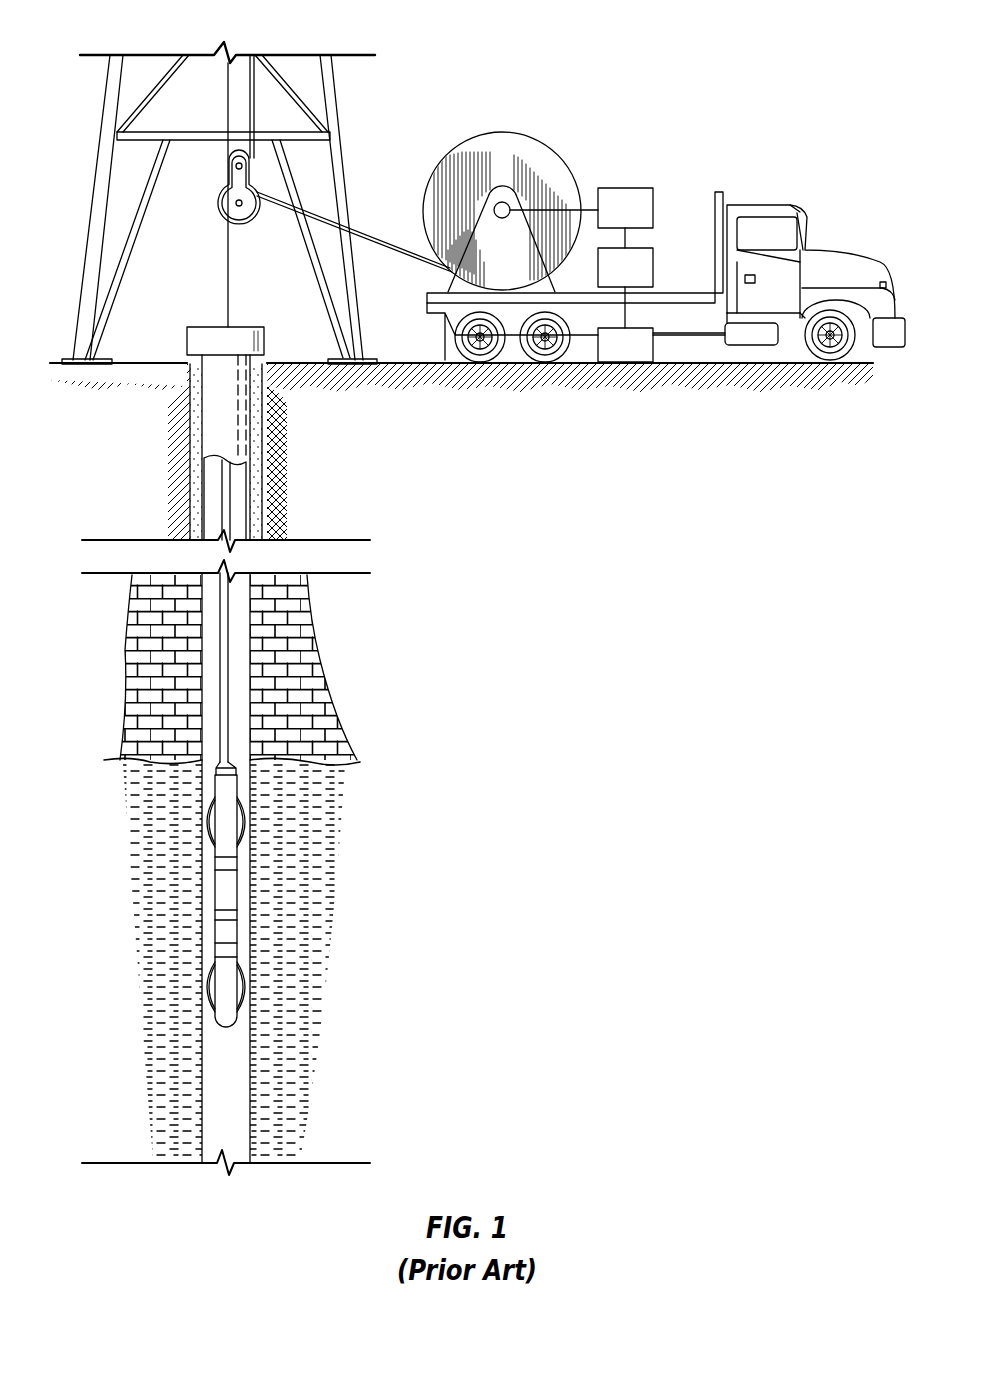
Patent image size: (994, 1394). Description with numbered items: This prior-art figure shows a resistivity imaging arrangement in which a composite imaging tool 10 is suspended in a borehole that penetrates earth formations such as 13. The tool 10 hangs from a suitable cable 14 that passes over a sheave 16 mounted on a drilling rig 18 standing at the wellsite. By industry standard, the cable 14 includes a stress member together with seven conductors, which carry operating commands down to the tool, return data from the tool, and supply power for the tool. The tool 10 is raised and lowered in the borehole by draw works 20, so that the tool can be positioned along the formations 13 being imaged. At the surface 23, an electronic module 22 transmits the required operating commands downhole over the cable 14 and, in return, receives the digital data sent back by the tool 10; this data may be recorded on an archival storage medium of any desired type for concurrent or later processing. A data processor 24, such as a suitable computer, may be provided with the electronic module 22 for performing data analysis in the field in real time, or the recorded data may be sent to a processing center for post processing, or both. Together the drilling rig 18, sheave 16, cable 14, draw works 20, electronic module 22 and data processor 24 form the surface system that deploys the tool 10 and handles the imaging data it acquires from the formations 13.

The composite imaging tool 10 is at (238, 888).
The earth formations 13 is at (357, 688).
The cable 14 is at (229, 292).
The sheave 16 is at (229, 186).
The drilling rig 18 is at (105, 111).
The draw works 20 is at (453, 148).
The electronic module 22 is at (654, 208).
The surface 23 is at (435, 360).
The data processor 24 is at (654, 268).